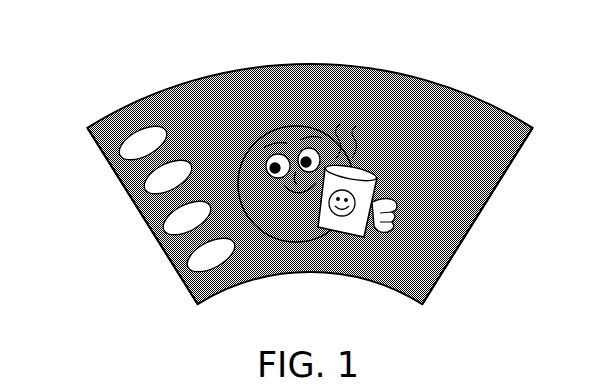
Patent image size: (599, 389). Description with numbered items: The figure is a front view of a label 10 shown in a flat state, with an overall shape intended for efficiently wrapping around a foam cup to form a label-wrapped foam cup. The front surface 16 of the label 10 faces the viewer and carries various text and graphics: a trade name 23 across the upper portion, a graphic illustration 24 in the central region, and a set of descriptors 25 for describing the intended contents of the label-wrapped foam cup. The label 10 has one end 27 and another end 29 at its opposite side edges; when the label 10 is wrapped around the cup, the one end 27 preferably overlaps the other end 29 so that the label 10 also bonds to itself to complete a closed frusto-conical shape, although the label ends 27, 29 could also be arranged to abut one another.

The label 10 is at (290, 162).
The front surface 16 is at (447, 100).
The trade name 23 is at (220, 90).
The graphic illustration 24 is at (266, 230).
The set of descriptors 25 is at (143, 190).
The one end 27 is at (167, 258).
The another end 29 is at (482, 213).